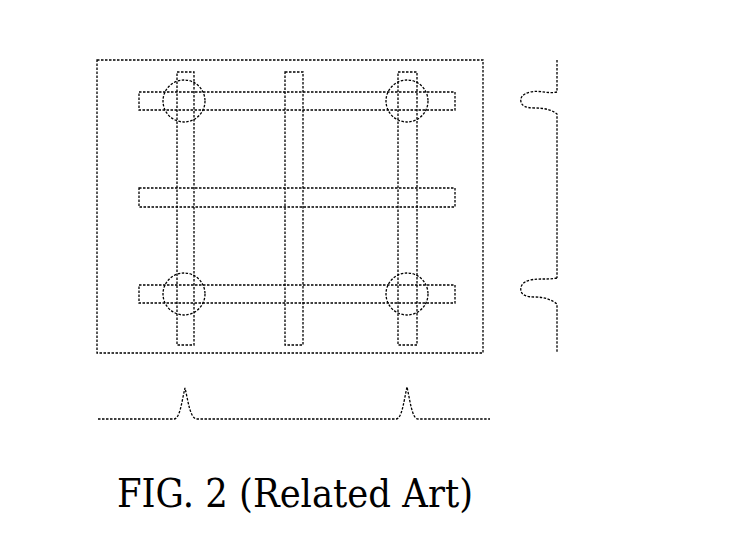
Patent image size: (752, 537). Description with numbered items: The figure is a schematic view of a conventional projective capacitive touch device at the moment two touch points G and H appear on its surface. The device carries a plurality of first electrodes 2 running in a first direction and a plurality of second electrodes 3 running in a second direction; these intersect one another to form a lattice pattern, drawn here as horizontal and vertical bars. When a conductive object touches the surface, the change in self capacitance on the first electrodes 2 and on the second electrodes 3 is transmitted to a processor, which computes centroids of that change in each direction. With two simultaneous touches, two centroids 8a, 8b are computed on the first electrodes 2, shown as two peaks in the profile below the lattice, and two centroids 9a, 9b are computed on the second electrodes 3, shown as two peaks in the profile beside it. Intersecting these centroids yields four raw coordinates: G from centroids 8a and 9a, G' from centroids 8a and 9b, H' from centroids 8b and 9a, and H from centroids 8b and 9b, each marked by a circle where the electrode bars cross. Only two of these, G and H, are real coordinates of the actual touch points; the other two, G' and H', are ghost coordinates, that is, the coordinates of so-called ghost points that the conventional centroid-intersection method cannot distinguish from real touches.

The first electrodes 2 is at (455, 93).
The second electrodes 3 is at (292, 82).
The touch point G is at (149, 72).
The ghost point G' is at (130, 334).
The touch point H is at (455, 335).
The ghost point H' is at (444, 76).
The centroid 9a is at (558, 106).
The centroid 9b is at (558, 296).
The centroid 8a is at (185, 421).
The centroid 8b is at (407, 421).